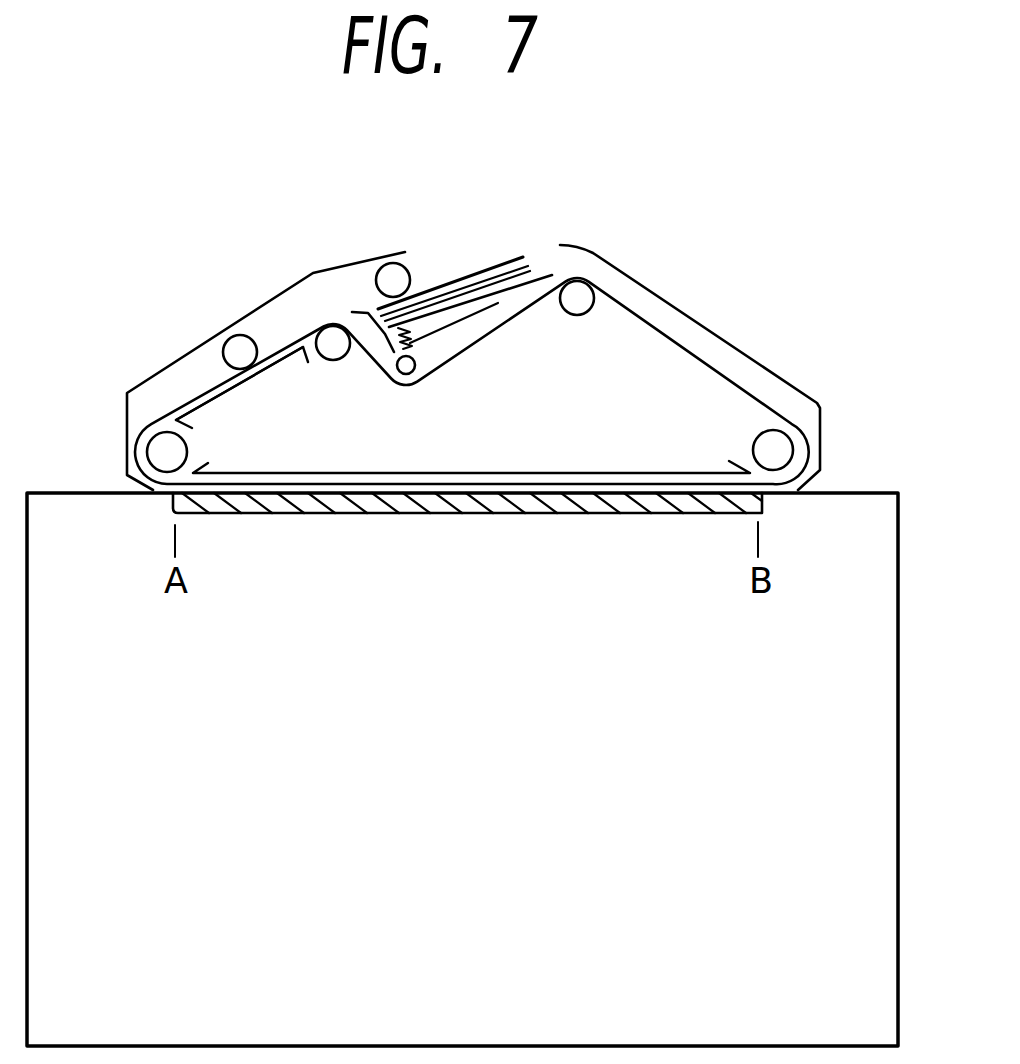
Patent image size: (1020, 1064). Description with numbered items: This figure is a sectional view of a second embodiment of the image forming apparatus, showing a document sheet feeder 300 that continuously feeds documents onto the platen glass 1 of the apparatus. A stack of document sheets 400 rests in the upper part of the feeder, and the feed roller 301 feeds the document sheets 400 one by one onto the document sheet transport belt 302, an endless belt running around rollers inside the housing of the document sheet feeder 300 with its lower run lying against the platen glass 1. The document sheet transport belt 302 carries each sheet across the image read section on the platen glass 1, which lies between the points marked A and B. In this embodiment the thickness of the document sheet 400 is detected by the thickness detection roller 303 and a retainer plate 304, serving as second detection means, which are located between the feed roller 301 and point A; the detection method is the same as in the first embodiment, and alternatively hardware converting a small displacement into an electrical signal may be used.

The platen glass 1 is at (493, 516).
The document sheet feeder 300 is at (747, 355).
The feed roller 301 is at (393, 263).
The document sheet transport belt 302 is at (662, 337).
The thickness detection roller 303 is at (237, 334).
The retainer plate 304 is at (253, 367).
The document sheet 400 is at (487, 268).